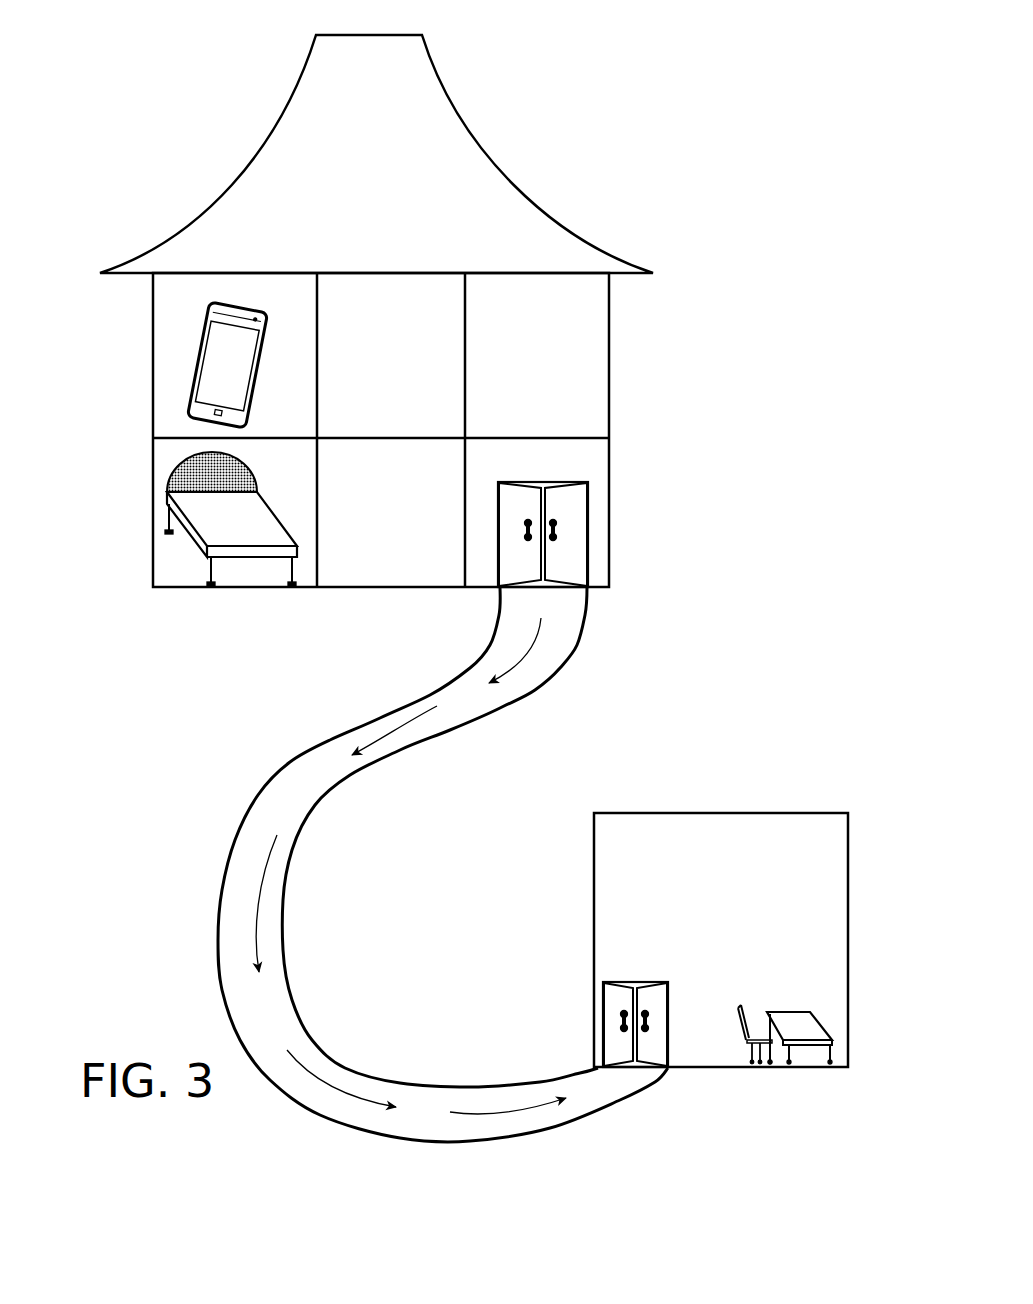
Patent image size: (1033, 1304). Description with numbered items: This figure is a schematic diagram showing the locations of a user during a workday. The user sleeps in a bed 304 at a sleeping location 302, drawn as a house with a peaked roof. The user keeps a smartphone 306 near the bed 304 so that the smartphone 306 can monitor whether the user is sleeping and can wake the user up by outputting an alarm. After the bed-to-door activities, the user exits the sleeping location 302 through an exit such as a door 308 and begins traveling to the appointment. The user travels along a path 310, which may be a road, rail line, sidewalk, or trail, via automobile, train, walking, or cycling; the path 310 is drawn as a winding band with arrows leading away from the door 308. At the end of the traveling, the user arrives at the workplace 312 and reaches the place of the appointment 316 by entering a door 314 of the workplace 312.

The sleeping location 302 is at (535, 142).
The bed 304 is at (250, 557).
The smartphone 306 is at (197, 367).
The door 308 is at (588, 540).
The path 310 is at (500, 713).
The workplace 312 is at (762, 813).
The door 314 is at (600, 1028).
The appointment 316 is at (787, 986).